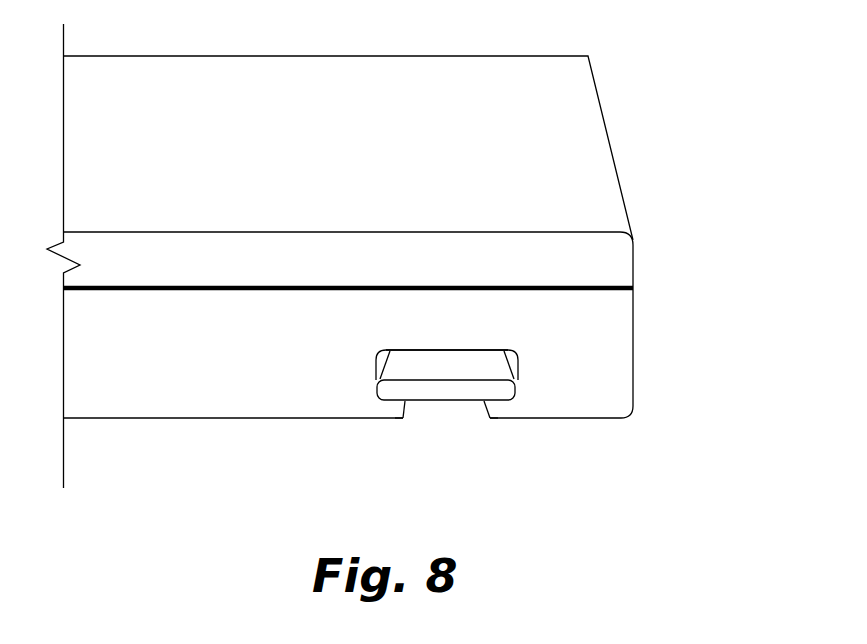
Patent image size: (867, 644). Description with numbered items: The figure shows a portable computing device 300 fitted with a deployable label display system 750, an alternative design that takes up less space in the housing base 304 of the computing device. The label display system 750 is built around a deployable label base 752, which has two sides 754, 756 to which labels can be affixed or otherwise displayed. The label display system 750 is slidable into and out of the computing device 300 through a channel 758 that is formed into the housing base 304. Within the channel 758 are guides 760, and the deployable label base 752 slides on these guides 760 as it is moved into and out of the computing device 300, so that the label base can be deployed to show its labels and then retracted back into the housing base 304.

The computing device 300 is at (615, 136).
The housing base 304 is at (635, 320).
The label display system 750 is at (420, 386).
The deployable label base 752 is at (457, 393).
The side 754 is at (427, 367).
The side 756 is at (436, 403).
The channel 758 is at (480, 350).
The guides 760 is at (381, 406).